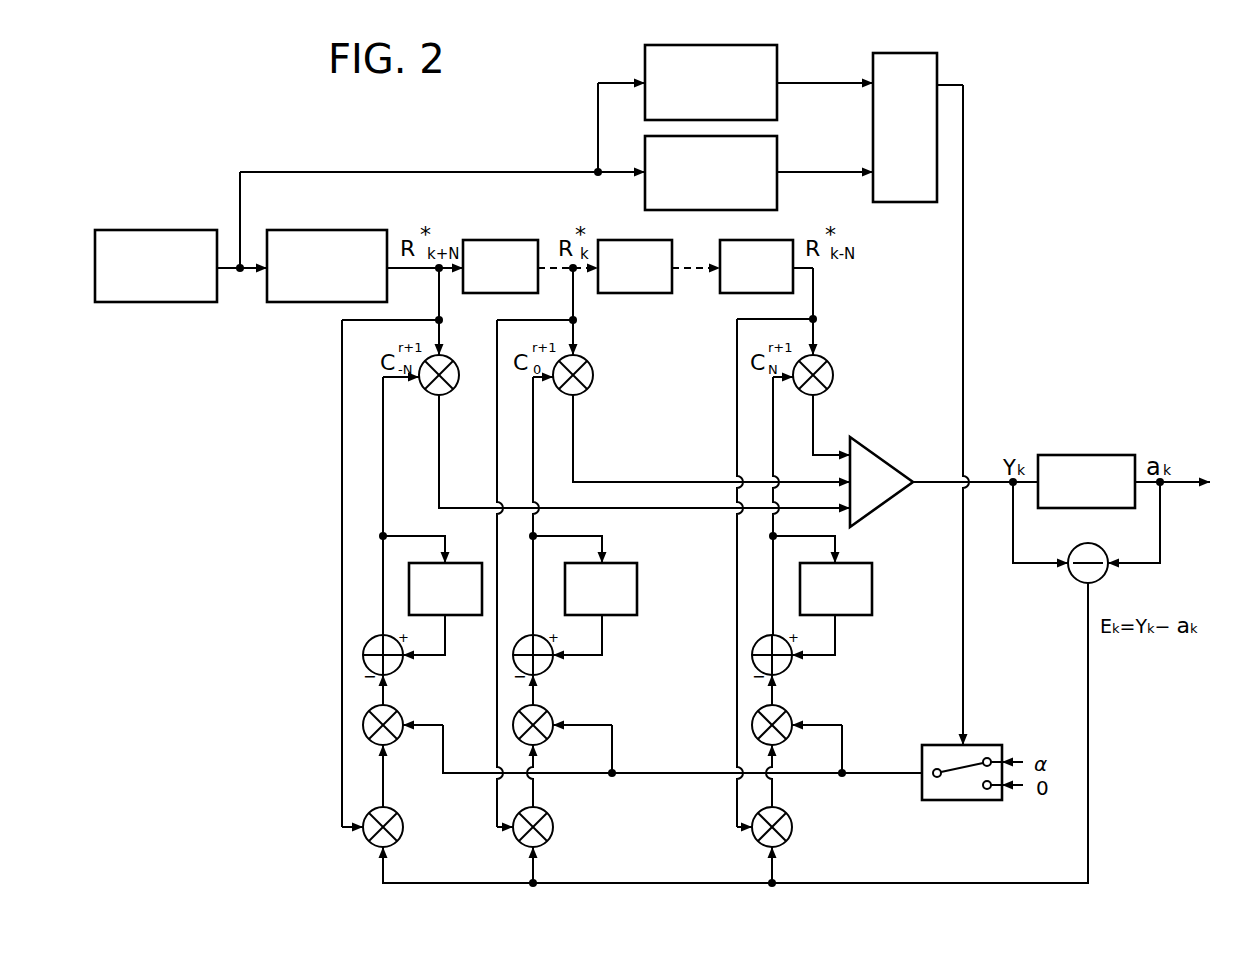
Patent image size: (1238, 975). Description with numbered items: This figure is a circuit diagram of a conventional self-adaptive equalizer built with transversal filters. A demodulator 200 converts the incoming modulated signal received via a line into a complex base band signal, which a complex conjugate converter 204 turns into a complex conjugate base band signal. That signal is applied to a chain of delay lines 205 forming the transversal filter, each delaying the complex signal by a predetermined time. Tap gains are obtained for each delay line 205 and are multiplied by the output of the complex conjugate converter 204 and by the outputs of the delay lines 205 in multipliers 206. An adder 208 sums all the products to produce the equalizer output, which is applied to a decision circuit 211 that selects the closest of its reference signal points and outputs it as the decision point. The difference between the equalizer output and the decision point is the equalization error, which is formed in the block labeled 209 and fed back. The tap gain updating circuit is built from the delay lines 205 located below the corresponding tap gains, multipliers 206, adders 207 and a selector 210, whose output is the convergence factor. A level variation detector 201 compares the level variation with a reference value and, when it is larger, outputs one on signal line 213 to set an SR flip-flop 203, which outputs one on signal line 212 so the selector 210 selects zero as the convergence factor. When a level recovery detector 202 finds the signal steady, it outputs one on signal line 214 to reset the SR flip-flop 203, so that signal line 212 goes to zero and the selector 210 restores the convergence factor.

The demodulator 200 is at (157, 214).
The level variation detector 201 is at (645, 72).
The level recovery detector 202 is at (645, 158).
The SR flip-flop 203 is at (937, 67).
The complex conjugate converter 204 is at (312, 231).
The delay line 205 is at (493, 240).
The multiplier 206 is at (427, 393).
The adder 207 is at (398, 672).
The adder 208 is at (887, 462).
The subtractor 209 is at (1105, 578).
The selector 210 is at (950, 803).
The decision circuit 211 is at (1067, 508).
The signal line 212 is at (965, 610).
The signal line 213 is at (792, 80).
The signal line 214 is at (792, 170).